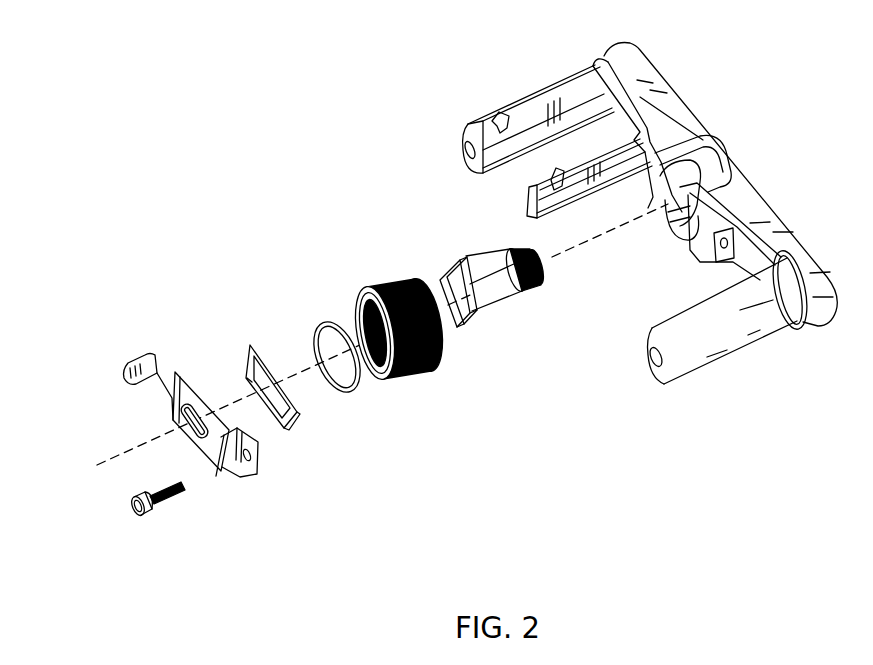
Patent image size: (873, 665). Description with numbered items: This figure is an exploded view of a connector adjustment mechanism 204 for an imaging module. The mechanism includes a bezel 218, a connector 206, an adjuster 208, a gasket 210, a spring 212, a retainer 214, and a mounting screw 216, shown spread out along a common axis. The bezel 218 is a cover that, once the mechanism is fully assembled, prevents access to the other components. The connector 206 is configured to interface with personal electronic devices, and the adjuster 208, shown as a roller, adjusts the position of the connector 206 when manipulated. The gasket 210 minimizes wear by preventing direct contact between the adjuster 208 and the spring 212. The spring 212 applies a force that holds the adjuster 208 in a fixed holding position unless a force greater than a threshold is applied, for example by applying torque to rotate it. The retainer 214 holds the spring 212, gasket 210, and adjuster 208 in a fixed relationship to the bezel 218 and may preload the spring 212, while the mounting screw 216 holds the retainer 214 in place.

The adjustment assembly 204 is at (162, 56).
The connector 206 is at (517, 258).
The adjuster 208 is at (392, 280).
The gasket 210 is at (320, 317).
The spring 212 is at (250, 343).
The retainer 214 is at (153, 355).
The mounting screw 216 is at (147, 513).
The bezel 218 is at (527, 98).